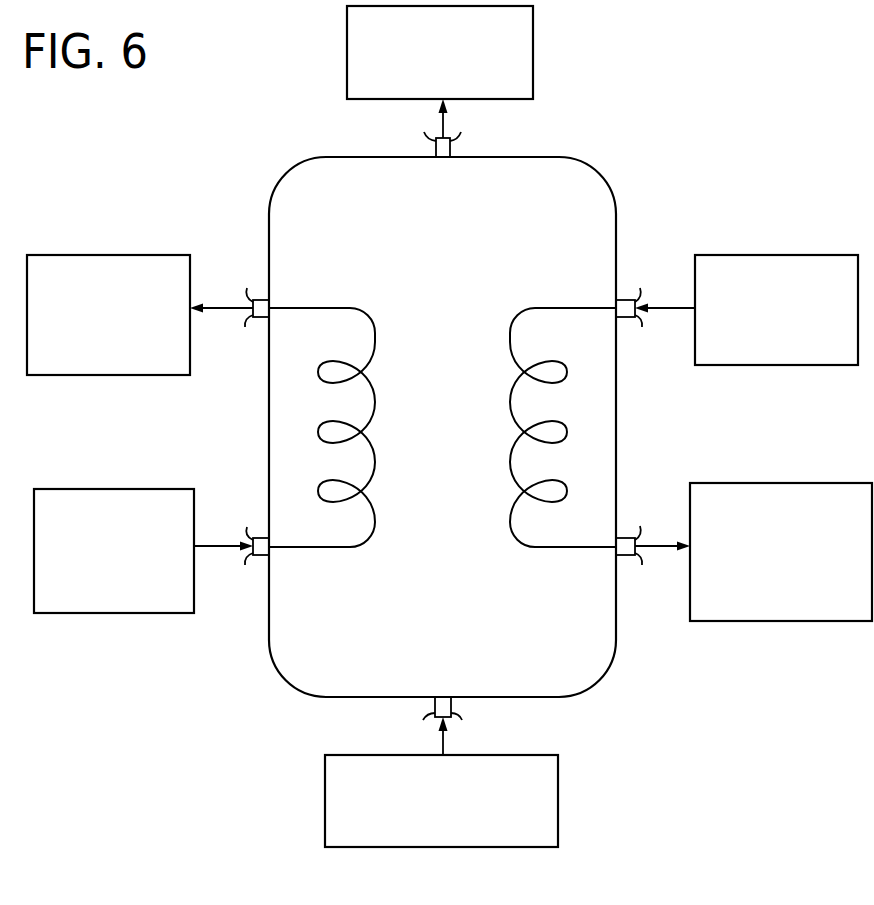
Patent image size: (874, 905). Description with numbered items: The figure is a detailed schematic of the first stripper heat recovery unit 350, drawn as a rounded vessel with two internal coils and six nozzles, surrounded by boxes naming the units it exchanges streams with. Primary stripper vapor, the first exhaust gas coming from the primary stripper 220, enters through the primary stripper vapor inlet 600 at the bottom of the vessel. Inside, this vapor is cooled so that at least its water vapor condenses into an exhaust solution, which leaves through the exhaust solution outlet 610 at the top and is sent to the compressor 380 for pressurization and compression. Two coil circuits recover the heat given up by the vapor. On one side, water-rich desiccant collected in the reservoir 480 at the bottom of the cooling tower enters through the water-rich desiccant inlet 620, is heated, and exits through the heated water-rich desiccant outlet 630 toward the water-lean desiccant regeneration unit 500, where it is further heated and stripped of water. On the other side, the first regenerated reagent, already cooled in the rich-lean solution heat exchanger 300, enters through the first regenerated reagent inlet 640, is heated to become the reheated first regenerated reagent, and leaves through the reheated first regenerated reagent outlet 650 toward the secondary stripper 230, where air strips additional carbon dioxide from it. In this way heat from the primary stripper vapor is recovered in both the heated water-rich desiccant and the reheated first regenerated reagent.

The first stripper heat recovery unit 350 is at (665, 86).
The compressor 380 is at (440, 52).
The reservoir 480 is at (776, 310).
The water-lean desiccant regeneration unit 500 is at (781, 552).
The primary stripper 220 is at (441, 801).
The rich-lean solution heat exchanger 300 is at (114, 551).
The secondary stripper 230 is at (108, 315).
The primary stripper vapor inlet 600 is at (452, 706).
The exhaust solution outlet 610 is at (452, 148).
The water-rich desiccant inlet 620 is at (628, 298).
The heated water-rich desiccant outlet 630 is at (626, 536).
The first regenerated reagent inlet 640 is at (262, 557).
The reheated first regenerated reagent outlet 650 is at (262, 298).